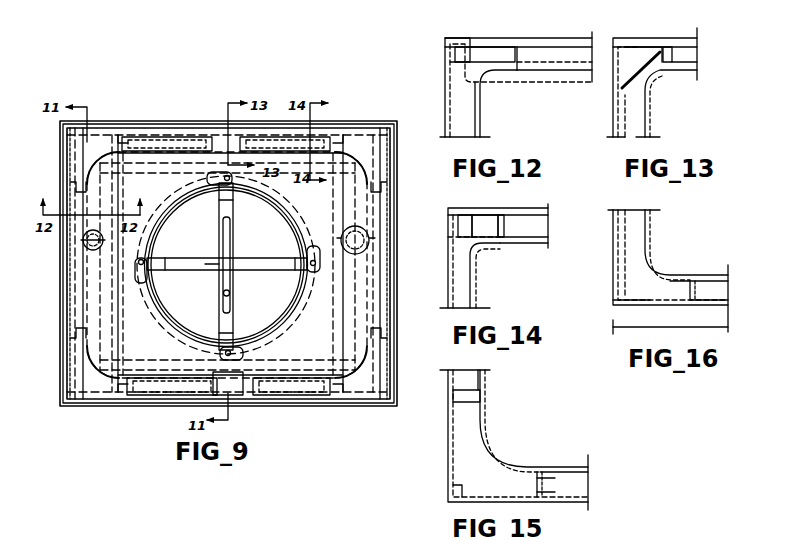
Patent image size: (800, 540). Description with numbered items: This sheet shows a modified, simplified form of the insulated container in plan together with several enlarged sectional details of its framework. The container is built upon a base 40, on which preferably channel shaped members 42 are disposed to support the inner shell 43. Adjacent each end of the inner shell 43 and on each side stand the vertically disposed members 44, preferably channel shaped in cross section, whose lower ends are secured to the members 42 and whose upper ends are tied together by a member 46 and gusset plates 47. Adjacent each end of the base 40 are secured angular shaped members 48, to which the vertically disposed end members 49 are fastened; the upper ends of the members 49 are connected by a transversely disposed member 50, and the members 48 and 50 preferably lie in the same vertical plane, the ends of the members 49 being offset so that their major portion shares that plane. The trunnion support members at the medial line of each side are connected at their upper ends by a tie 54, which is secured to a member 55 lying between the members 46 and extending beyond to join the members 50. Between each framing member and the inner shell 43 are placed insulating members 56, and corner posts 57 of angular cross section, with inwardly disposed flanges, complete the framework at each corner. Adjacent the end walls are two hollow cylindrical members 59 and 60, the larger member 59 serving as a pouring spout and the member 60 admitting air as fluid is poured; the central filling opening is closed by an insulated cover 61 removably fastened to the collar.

In FIG. 16, the base 40 is at (722, 308).
In FIG. 16, the channel shaped members 42 is at (700, 295).
In FIG. 16, the inner shell 43 is at (656, 268).
In FIG. 15, the inner shell 43 is at (490, 442).
In FIG. 9, the vertically disposed members 44 is at (133, 152).
In FIG. 15, the vertically disposed members 44 is at (536, 482).
In FIG. 9, the member 46 is at (125, 317).
In FIG. 12, the member 46 is at (535, 47).
In FIG. 14, the member 46 is at (502, 222).
In FIG. 14, the gusset plates 47 is at (478, 222).
In FIG. 16, the angular shaped members 48 is at (616, 297).
In FIG. 9, the vertically disposed end members 49 is at (73, 332).
In FIG. 12, the vertically disposed end members 49 is at (456, 84).
In FIG. 15, the vertically disposed end members 49 is at (459, 396).
In FIG. 12, the transversely disposed member 50 is at (446, 48).
In FIG. 9, the tie 54 is at (240, 157).
In FIG. 13, the tie 54 is at (644, 48).
In FIG. 9, the member 55 is at (205, 174).
In FIG. 13, the member 55 is at (672, 53).
In FIG. 14, the member 55 is at (504, 230).
In FIG. 13, the insulating members 56 is at (680, 68).
In FIG. 14, the insulating members 56 is at (503, 243).
In FIG. 16, the insulating members 56 is at (700, 278).
In FIG. 15, the insulating members 56 is at (477, 388).
In FIG. 15, the corner posts 57 is at (460, 490).
In FIG. 9, the hollow cylindrical member 59 is at (352, 254).
In FIG. 9, the hollow cylindrical member 60 is at (95, 254).
In FIG. 9, the cover 61 is at (190, 318).